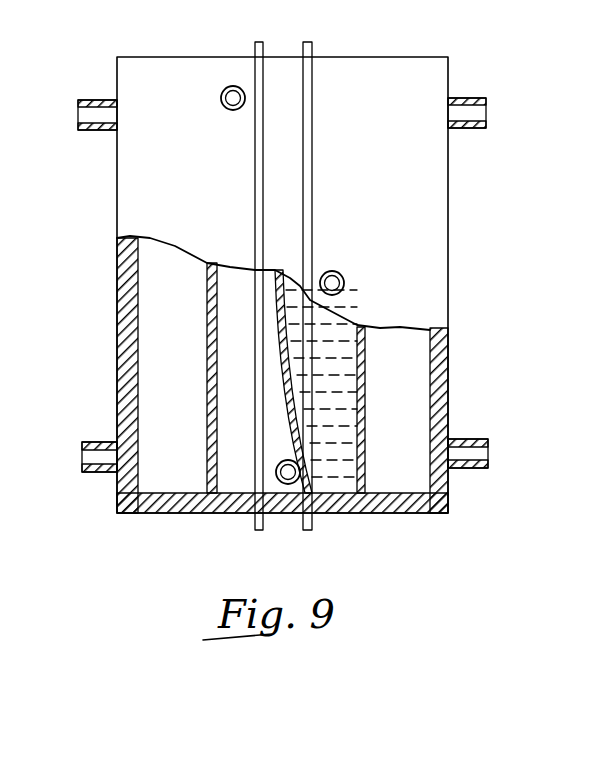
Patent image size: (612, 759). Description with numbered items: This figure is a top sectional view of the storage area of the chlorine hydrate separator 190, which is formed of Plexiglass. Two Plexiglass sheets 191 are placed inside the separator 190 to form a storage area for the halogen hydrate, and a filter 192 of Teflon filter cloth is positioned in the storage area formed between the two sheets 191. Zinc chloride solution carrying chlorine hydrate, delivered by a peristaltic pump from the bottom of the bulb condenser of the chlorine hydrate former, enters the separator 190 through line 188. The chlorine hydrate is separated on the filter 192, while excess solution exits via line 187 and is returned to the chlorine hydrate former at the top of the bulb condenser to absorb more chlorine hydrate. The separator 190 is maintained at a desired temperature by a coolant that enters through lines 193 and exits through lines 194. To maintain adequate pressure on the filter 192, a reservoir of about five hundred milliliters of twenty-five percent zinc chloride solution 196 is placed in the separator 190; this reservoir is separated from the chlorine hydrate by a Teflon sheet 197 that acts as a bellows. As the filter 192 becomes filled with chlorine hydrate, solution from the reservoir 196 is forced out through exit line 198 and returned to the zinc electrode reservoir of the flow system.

The line 187 is at (236, 112).
The line 188 is at (278, 466).
The chlorine hydrate separator 190 is at (452, 266).
The Plexiglass sheets 191 is at (207, 384).
The filter 192 is at (255, 208).
The coolant inlet lines 193 is at (97, 100).
The coolant exit lines 194 is at (98, 442).
The zinc chloride solution reservoir 196 is at (345, 440).
The Teflon sheet 197 is at (312, 165).
The exit line 198 is at (343, 278).